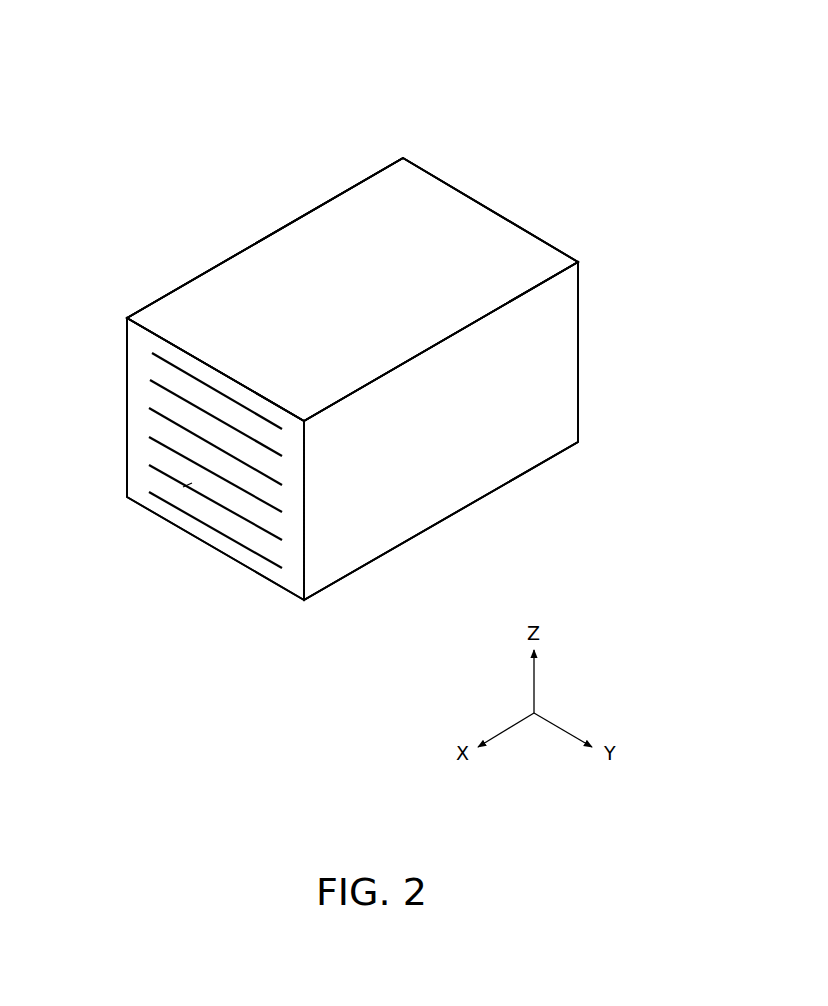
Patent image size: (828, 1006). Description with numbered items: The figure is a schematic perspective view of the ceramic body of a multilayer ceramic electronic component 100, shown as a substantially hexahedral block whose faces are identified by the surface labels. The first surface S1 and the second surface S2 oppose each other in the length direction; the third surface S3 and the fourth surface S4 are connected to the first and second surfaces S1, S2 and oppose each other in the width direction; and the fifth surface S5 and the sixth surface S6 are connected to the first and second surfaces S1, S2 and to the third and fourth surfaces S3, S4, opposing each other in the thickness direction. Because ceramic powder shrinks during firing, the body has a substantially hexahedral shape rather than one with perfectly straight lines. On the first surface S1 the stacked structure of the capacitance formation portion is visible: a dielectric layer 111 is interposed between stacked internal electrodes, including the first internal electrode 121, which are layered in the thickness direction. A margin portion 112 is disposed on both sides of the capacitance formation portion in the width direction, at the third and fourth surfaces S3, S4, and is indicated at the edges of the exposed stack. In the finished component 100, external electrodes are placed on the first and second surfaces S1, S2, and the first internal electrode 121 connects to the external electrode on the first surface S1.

The multilayer ceramic electronic component 100 is at (152, 54).
The dielectric layer 111 is at (152, 398).
The margin portion 112 is at (130, 420).
The first internal electrode 121 is at (152, 353).
The first surface S1 is at (213, 513).
The second surface S2 is at (470, 238).
The third surface S3 is at (552, 368).
The fourth surface S4 is at (202, 312).
The fifth surface S5 is at (353, 225).
The sixth surface S6 is at (360, 540).